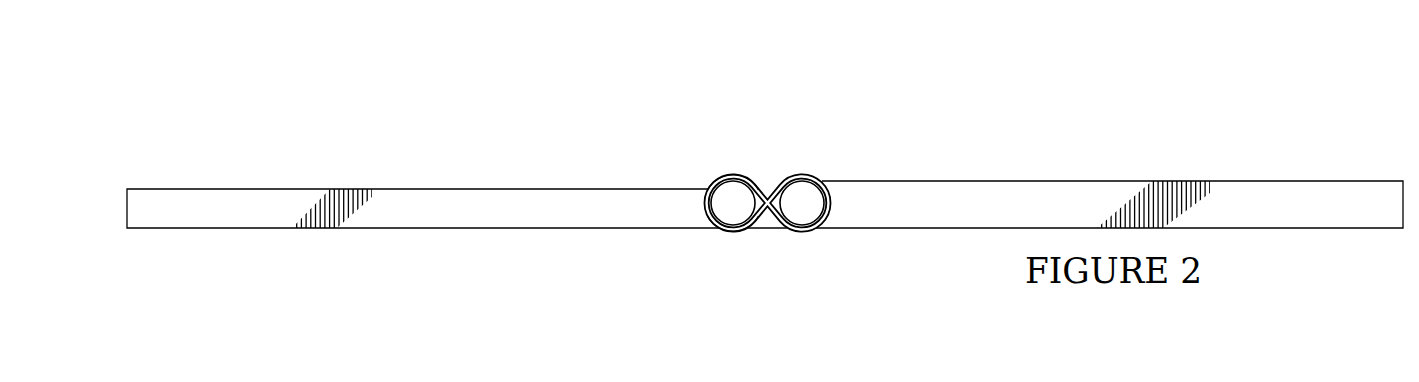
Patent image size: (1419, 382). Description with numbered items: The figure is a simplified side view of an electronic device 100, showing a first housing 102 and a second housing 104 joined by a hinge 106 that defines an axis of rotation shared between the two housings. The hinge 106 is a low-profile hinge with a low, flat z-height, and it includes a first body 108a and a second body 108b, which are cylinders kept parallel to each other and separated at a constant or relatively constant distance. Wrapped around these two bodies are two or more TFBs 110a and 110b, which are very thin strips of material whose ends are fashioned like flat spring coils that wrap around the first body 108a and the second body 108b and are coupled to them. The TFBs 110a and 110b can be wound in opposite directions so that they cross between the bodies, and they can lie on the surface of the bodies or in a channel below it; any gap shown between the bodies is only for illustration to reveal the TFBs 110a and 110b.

The electronic device 100 is at (636, 104).
The first housing 102 is at (1325, 190).
The second housing 104 is at (213, 195).
The hinge 106 is at (838, 256).
The first body 108a is at (818, 204).
The second body 108b is at (718, 204).
The TFB 110a is at (733, 232).
The TFB 110b is at (733, 174).